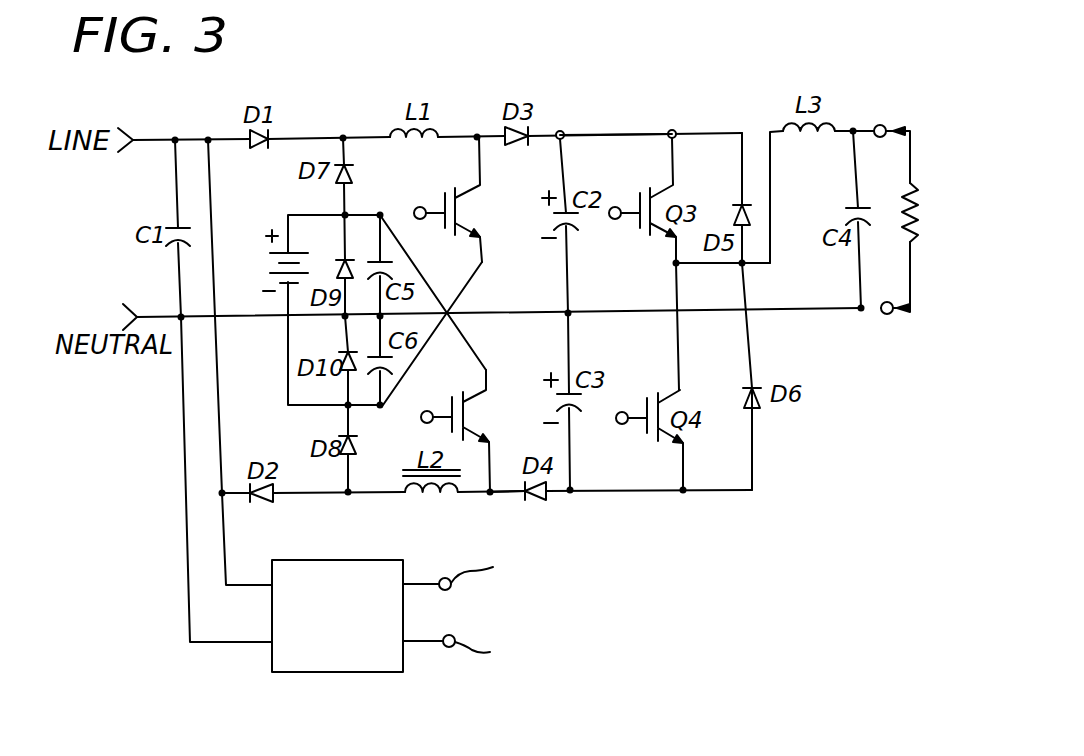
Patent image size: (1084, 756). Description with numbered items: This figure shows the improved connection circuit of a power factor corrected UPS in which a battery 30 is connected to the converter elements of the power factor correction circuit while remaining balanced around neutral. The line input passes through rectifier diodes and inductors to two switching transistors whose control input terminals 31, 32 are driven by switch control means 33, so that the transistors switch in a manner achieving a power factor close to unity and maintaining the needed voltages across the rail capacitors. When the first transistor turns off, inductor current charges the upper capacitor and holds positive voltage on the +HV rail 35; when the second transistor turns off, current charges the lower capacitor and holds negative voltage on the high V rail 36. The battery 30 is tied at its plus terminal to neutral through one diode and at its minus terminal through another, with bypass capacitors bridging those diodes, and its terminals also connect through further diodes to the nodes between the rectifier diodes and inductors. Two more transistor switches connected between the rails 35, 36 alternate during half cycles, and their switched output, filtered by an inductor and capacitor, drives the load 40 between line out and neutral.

The battery 30 is at (268, 267).
The input terminal 31 is at (414, 212).
The input terminal 32 is at (428, 410).
The switch control means 33 is at (353, 672).
The +HV rail 35 is at (612, 135).
The high V rail 36 is at (650, 491).
The load 40 is at (906, 212).